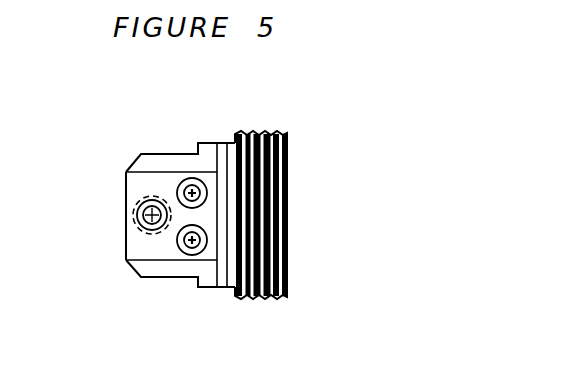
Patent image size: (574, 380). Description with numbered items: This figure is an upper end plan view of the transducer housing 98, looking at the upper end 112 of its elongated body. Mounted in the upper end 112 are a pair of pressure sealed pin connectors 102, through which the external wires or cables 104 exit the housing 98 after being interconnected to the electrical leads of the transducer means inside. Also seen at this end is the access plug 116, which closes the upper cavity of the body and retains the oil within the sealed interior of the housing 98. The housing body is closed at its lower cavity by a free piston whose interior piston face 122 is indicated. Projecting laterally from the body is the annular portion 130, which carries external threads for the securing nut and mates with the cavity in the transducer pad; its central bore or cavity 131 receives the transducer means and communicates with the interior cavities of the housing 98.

The transducer housing 98 is at (117, 172).
The pressure sealed pin connectors 102 is at (186, 179).
The external wires or cables 104 is at (197, 185).
The upper end 112 is at (145, 178).
The access plug 116 is at (140, 212).
The piston face 122 is at (126, 237).
The projecting annular portion 130 is at (257, 133).
The central bore or cavity 131 is at (287, 260).